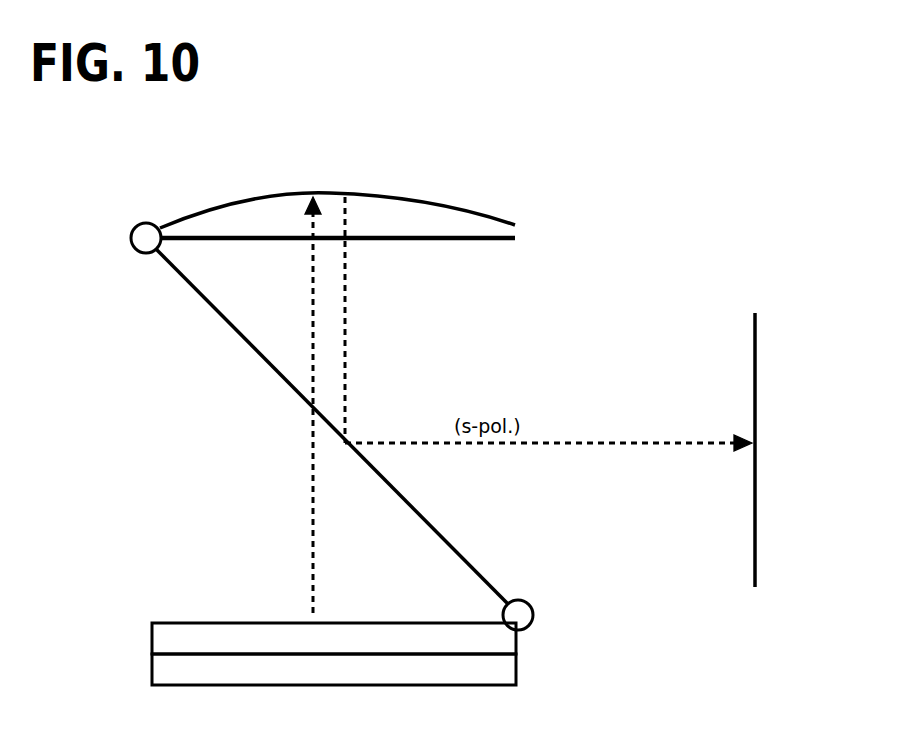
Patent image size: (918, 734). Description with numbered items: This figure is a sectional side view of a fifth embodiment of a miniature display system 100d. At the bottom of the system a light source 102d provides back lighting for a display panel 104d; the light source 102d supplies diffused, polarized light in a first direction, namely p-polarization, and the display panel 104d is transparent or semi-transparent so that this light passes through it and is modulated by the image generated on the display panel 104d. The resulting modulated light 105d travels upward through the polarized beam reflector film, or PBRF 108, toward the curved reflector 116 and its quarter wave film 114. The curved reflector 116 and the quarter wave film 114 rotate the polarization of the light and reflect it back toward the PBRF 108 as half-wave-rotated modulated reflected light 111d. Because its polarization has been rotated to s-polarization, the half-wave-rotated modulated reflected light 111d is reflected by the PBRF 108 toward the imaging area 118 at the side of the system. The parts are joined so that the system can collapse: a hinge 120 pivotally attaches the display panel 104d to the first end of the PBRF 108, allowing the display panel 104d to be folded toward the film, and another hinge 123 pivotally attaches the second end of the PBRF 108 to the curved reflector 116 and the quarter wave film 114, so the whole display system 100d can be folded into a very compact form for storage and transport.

The miniature display system 100d is at (735, 150).
The curved reflector 116 is at (466, 209).
The quarter wave film 114 is at (383, 240).
The hinge 123 is at (130, 238).
The polarized beam reflector film (PBRF) 108 is at (409, 508).
The hinge 120 is at (522, 603).
The modulated light 105d is at (313, 582).
The half-wave-rotated modulated reflected light 111d is at (345, 355).
The imaging area 118 is at (755, 405).
The display panel 104d is at (152, 640).
The light source 102d is at (516, 667).